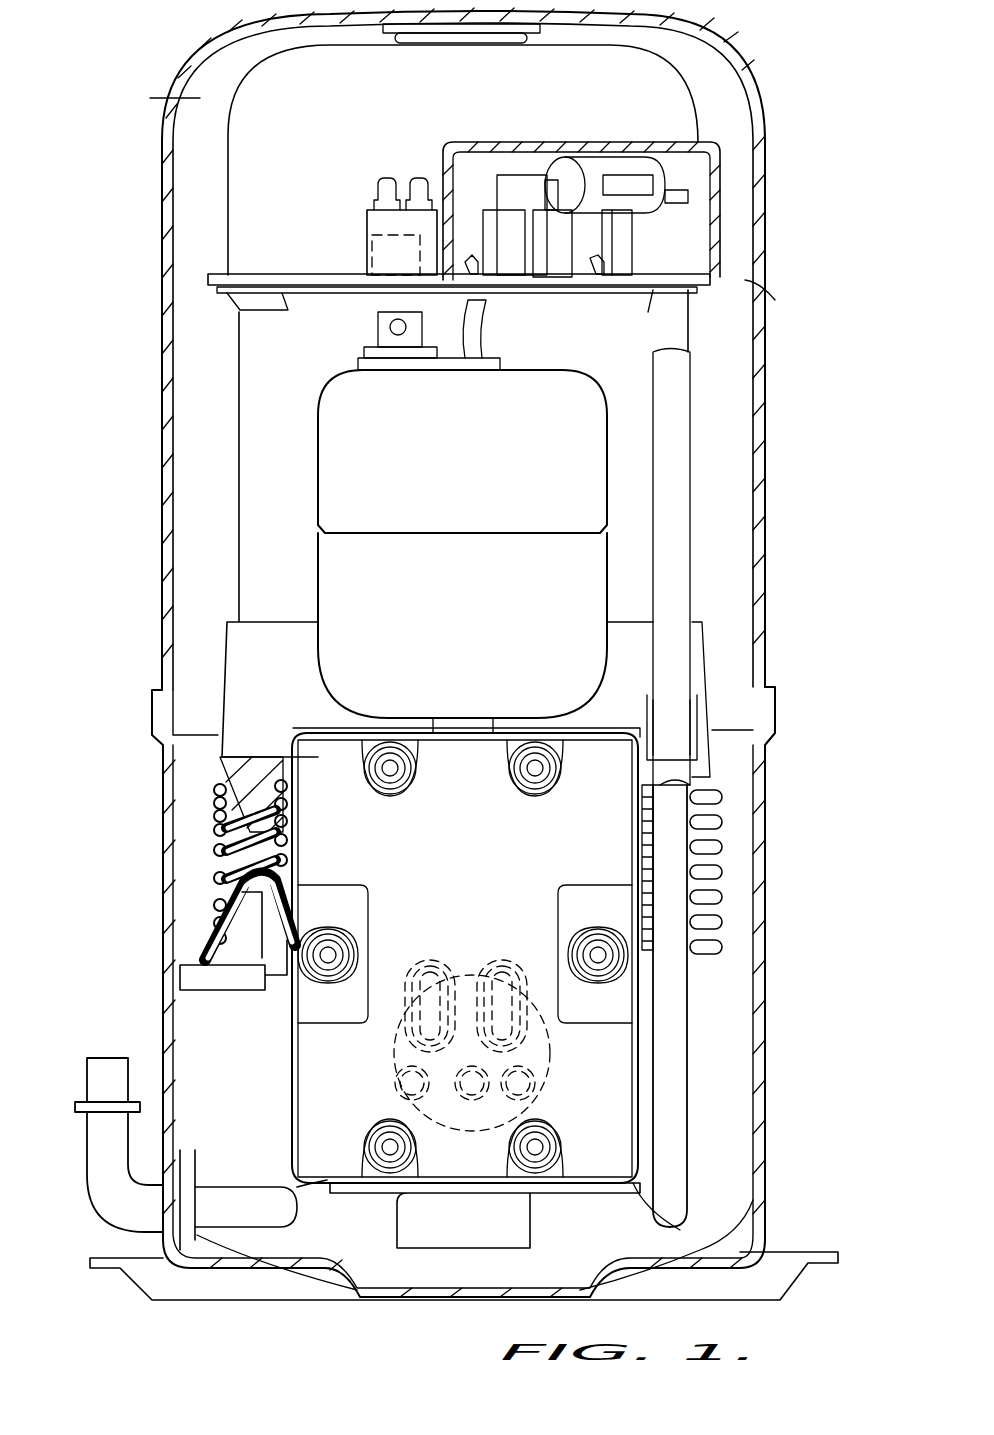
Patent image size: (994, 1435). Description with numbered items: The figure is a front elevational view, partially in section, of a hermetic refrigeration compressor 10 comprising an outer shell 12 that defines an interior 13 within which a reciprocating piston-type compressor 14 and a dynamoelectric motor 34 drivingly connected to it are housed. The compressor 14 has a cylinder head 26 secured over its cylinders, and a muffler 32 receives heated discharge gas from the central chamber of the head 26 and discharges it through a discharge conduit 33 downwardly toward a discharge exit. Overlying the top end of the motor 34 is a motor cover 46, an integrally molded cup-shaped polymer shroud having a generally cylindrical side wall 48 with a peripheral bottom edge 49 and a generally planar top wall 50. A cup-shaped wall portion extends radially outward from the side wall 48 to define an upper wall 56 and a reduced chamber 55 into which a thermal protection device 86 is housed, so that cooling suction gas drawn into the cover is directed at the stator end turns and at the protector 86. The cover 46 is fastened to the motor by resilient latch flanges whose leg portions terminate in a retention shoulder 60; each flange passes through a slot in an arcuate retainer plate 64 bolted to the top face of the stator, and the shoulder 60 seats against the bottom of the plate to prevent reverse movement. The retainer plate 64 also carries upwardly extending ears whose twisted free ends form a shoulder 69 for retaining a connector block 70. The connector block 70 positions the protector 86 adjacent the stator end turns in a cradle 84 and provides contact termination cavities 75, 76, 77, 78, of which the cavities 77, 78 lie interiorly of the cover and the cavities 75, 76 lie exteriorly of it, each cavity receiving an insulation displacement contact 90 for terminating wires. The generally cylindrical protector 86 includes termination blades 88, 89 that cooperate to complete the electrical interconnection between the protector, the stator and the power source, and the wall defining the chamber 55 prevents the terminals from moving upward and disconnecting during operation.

The hermetic refrigeration compressor 10 is at (138, 56).
The outer shell 12 is at (211, 46).
The interior 13 is at (154, 100).
The compressor 14 is at (720, 841).
The cylinder head 26 is at (460, 880).
The muffler 32 is at (466, 484).
The discharge conduit 33 is at (490, 330).
The dynamoelectric motor 34 is at (712, 428).
The motor cover 46 is at (517, 141).
The side wall 48 is at (690, 118).
The peripheral bottom edge 49 is at (745, 280).
The top wall 50 is at (623, 45).
The reduced chamber 55 is at (505, 162).
The upper wall 56 is at (471, 142).
The retention shoulder 60 is at (240, 302).
The retainer plate 64 is at (653, 290).
The shoulder 69 is at (430, 270).
The connector block 70 is at (648, 258).
The contact termination cavity 75 is at (355, 196).
The contact termination cavity 76 is at (355, 196).
The contact termination cavity 77 is at (408, 164).
The contact termination cavity 78 is at (445, 162).
The cradle 84 is at (615, 228).
The thermal protection device 86 is at (670, 178).
The termination blade 88 is at (677, 145).
The termination blade 89 is at (688, 195).
The contact 90 is at (520, 185).